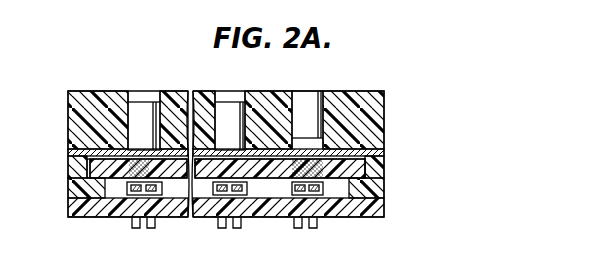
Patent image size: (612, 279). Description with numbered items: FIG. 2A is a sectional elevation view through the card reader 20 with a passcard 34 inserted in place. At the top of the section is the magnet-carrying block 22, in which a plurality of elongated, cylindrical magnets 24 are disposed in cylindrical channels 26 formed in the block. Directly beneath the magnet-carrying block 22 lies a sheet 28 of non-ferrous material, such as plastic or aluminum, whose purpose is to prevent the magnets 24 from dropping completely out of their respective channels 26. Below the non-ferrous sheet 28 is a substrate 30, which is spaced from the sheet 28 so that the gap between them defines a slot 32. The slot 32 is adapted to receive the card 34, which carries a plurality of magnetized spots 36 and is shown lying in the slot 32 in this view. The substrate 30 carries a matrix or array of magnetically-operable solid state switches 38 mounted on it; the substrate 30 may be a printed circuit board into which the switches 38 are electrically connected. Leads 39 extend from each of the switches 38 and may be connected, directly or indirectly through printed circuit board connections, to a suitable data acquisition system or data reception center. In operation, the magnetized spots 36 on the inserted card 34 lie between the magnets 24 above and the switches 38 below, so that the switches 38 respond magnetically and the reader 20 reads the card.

The card reader 20 is at (58, 117).
The magnet-carrying block 22 is at (382, 93).
The magnet 24 is at (134, 101).
The cylindrical channel 26 is at (212, 83).
The sheet of non-ferrous material 28 is at (386, 130).
The substrate 30 is at (384, 203).
The slot 32 is at (87, 159).
The passcard 34 is at (385, 169).
The magnetized spot 36 is at (328, 178).
The magnetically-operable solid state switch 38 is at (127, 189).
The lead 39 is at (152, 229).